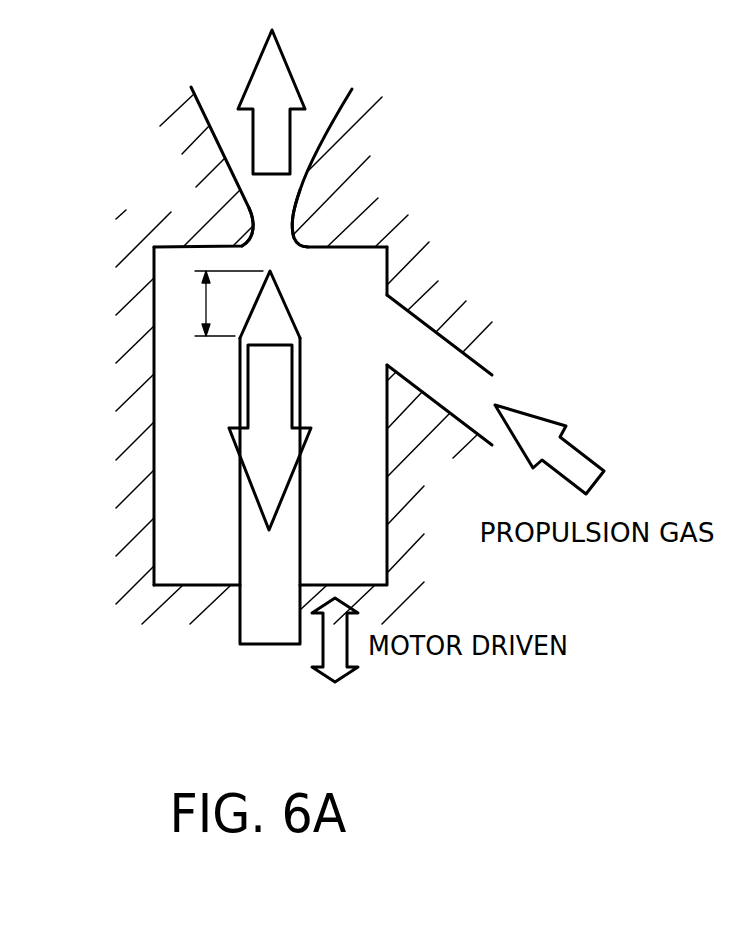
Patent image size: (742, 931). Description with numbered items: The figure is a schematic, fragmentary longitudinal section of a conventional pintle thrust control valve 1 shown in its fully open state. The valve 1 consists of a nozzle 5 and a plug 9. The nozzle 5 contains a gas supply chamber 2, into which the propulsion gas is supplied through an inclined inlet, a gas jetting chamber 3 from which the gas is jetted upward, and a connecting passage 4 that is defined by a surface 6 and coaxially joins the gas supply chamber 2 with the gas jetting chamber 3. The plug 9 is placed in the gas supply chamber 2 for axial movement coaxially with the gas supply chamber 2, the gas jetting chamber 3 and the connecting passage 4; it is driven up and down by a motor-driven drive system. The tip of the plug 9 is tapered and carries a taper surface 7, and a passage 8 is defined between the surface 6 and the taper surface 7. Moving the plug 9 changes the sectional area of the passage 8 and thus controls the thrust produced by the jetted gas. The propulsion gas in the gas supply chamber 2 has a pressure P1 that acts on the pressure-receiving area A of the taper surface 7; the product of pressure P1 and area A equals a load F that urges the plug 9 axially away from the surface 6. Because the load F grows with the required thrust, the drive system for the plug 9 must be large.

The pintle thrust control valve 1 is at (406, 82).
The gas supply chamber 2 is at (170, 500).
The gas jetting chamber 3 is at (235, 135).
The connecting passage 4 is at (273, 205).
The nozzle 5 is at (152, 265).
The surface 6 is at (292, 238).
The taper surface 7 is at (288, 305).
The passage 8 is at (270, 238).
The plug 9 is at (268, 637).
The pressure-receiving area A is at (202, 300).
The load F is at (285, 405).
The pressure P1 is at (365, 267).